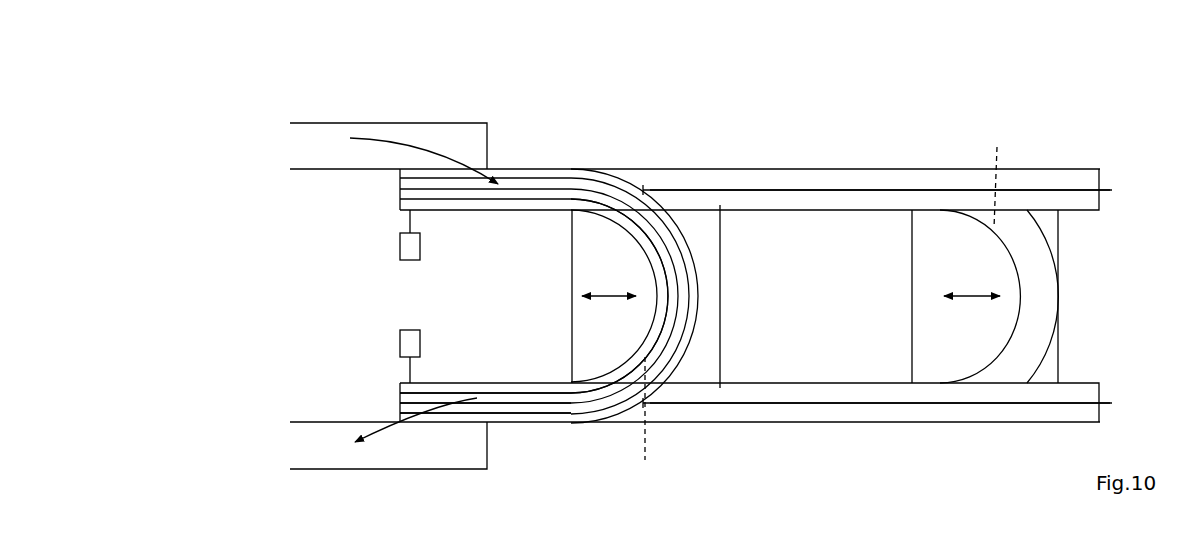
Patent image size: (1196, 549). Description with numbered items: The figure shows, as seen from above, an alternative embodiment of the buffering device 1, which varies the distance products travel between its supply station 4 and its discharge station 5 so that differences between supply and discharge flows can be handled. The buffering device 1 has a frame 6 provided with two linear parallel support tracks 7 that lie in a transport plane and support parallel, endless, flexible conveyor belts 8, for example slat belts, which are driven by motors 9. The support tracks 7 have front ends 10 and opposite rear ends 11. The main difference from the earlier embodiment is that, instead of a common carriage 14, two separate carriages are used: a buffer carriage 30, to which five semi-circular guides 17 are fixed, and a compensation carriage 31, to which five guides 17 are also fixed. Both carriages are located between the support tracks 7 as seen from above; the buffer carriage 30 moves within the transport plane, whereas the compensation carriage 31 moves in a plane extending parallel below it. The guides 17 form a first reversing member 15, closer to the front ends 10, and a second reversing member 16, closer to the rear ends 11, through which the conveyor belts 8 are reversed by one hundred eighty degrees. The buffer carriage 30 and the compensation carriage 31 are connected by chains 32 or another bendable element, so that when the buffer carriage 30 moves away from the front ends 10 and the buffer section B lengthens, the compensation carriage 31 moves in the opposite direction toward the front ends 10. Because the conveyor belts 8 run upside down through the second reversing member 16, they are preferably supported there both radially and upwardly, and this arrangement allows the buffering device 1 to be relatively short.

The buffering device 1 is at (897, 123).
The supply station 4 is at (445, 180).
The discharge station 5 is at (446, 416).
The frame 6 is at (730, 176).
The support tracks 7 is at (766, 184).
The conveyor belts 8 is at (560, 389).
The motors 9 is at (408, 330).
The front ends 10 is at (400, 183).
The rear ends 11 is at (1100, 205).
The carriage 14 is at (617, 352).
The first reversing member 15 is at (655, 245).
The second reversing member 16 is at (1027, 240).
The guides 17 is at (821, 304).
The buffer carriage 30 is at (693, 222).
The compensation carriage 31 is at (931, 232).
The chains 32 is at (810, 186).
The buffer section B is at (695, 73).